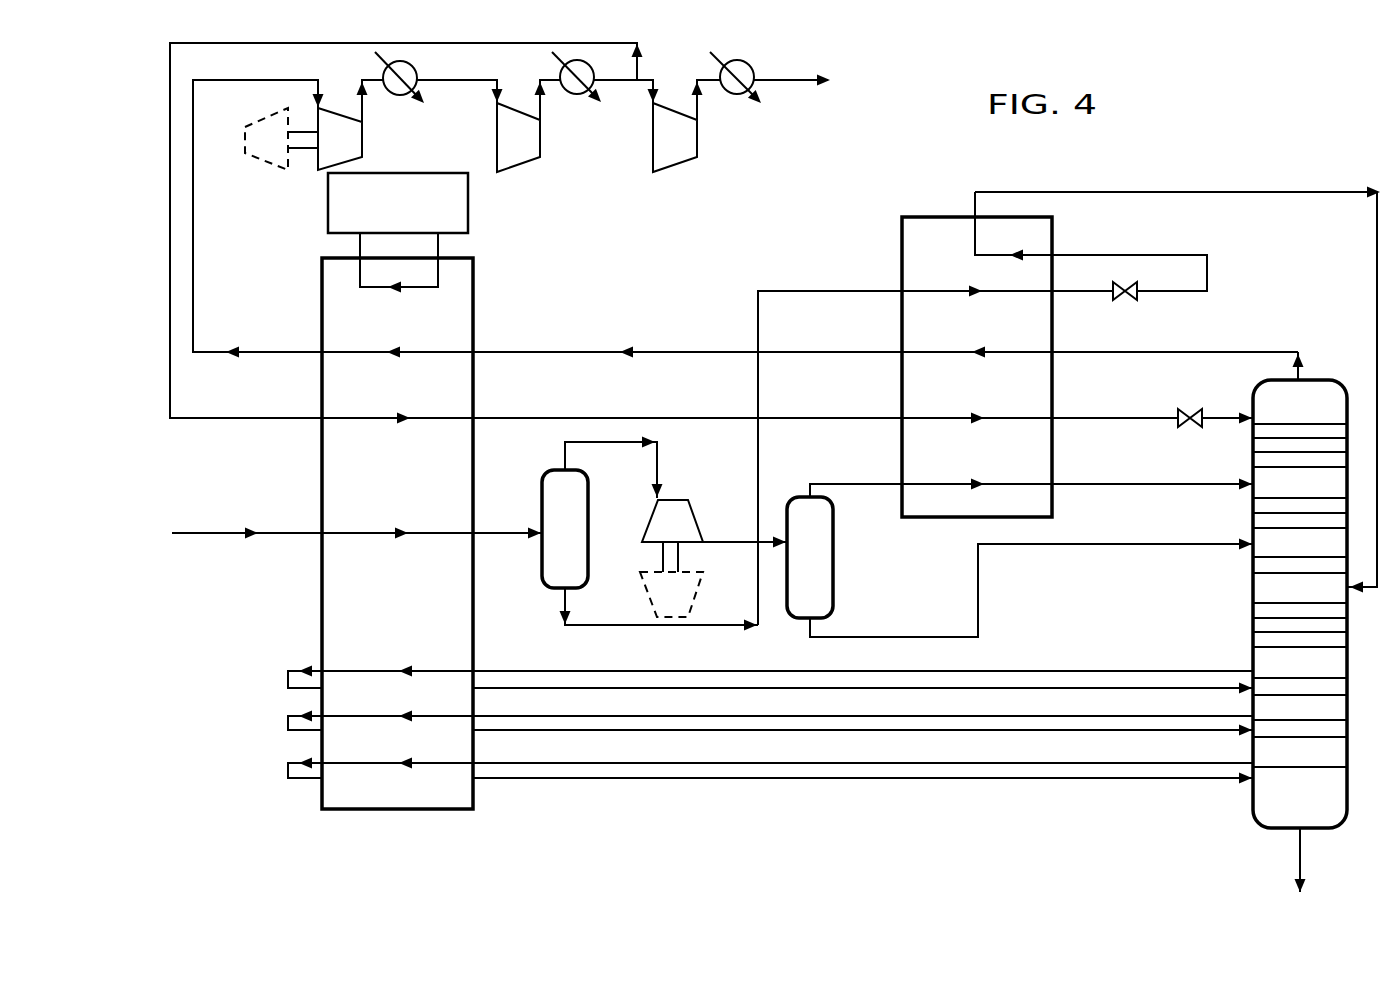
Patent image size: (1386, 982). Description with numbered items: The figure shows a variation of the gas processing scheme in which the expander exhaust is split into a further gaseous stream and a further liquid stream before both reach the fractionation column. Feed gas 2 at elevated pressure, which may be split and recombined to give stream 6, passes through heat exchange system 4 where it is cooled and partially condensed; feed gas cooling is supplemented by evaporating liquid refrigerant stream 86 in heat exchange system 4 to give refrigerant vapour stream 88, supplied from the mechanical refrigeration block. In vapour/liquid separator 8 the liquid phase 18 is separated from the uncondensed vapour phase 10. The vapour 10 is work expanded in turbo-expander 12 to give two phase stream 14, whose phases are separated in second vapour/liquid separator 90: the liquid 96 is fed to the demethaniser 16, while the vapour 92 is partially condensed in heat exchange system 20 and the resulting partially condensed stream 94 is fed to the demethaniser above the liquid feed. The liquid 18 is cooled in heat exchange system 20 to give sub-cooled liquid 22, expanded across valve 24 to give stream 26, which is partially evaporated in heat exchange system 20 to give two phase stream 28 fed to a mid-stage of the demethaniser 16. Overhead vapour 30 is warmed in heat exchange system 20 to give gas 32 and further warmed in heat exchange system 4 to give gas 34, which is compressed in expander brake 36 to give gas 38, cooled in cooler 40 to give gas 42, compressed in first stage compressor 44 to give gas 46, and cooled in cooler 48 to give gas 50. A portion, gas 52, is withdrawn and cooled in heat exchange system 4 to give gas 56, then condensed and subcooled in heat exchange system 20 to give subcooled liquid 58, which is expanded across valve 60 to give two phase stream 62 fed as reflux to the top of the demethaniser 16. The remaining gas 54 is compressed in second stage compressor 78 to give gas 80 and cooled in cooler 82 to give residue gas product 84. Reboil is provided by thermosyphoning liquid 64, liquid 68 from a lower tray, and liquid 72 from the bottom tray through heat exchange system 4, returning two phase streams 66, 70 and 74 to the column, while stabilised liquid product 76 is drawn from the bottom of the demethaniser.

The feed gas 2 is at (215, 535).
The heat exchange system 4 is at (402, 811).
The recombined feed stream 6 is at (500, 532).
The vapour/liquid separator 8 is at (542, 565).
The vapour phase 10 is at (563, 455).
The turbo-expander 12 is at (245, 140).
The two phase stream 14 is at (727, 541).
The demethaniser 16 is at (1253, 578).
The liquid phase 18 is at (635, 625).
The heat exchange system 20 is at (902, 250).
The sub-cooled liquid 22 is at (1077, 292).
The valve 24 is at (1123, 300).
The expanded stream 26 is at (1168, 255).
The two phase stream 28 is at (1377, 250).
The vapour 30 is at (1305, 368).
The gas 32 is at (565, 352).
The gas 34 is at (250, 352).
The expander brake 36 is at (317, 158).
The gas 38 is at (360, 103).
The cooler 40 is at (400, 96).
The gas 42 is at (460, 82).
The 1st stage compressor 44 is at (520, 172).
The gas 46 is at (544, 107).
The cooler 48 is at (577, 96).
The gas 50 is at (622, 82).
The gas 52 is at (262, 420).
The gas 54 is at (655, 80).
The gas 56 is at (718, 417).
The subcooled liquid 58 is at (1123, 417).
The valve 60 is at (1190, 408).
The two phase stream 62 is at (1233, 417).
The liquid 64 is at (1118, 670).
The two phase stream 66 is at (288, 683).
The liquid 68 is at (1033, 716).
The two phase stream 70 is at (288, 725).
The liquid 72 is at (985, 763).
The two phase stream 74 is at (288, 772).
The stabilised liquid product 76 is at (1300, 860).
The 2nd stage compressor 78 is at (678, 172).
The gas 80 is at (712, 84).
The cooler 82 is at (750, 65).
The residue gas product 84 is at (802, 82).
The liquid refrigerant stream 86 is at (440, 241).
The refrigerant vapour stream 88 is at (358, 241).
The second vapour/liquid separator 90 is at (833, 558).
The vapour 92 is at (850, 483).
The cooled vapor stream to column 94 is at (1132, 483).
The liquid 96 is at (1103, 545).